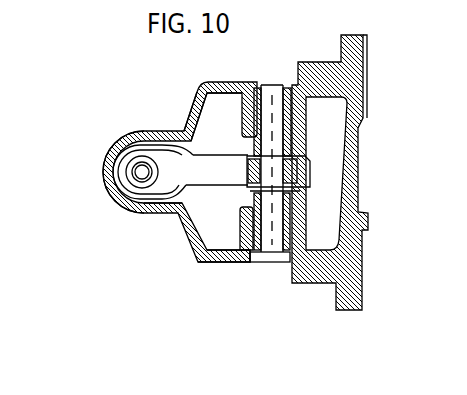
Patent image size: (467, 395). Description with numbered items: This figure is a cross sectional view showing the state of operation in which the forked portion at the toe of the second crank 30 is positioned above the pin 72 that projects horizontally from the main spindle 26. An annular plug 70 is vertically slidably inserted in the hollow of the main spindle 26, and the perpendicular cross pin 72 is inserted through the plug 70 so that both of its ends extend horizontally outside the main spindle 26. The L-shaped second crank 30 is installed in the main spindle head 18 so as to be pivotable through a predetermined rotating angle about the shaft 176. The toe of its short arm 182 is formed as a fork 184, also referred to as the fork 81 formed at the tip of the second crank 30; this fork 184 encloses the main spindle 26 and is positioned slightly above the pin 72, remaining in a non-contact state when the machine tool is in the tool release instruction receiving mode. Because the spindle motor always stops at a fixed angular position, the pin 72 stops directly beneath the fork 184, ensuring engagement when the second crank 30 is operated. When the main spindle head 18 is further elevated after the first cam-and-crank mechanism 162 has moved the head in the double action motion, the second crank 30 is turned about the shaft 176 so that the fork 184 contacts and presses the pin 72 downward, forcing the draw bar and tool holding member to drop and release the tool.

The first cam-and-crank mechanism 162 is at (330, 155).
The shaft 176 is at (302, 178).
The main spindle head 18 is at (146, 196).
The short arm 182 is at (190, 172).
The pin 72 is at (129, 176).
The fork 184 is at (140, 207).
The second crank 30 is at (209, 194).
The fork 81 is at (155, 152).
The plug 70 is at (138, 186).
The main spindle 26 is at (140, 176).